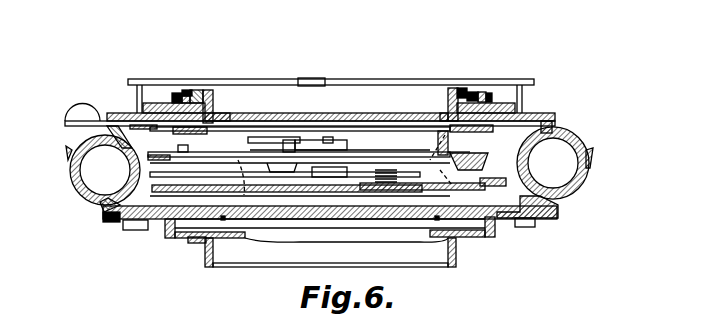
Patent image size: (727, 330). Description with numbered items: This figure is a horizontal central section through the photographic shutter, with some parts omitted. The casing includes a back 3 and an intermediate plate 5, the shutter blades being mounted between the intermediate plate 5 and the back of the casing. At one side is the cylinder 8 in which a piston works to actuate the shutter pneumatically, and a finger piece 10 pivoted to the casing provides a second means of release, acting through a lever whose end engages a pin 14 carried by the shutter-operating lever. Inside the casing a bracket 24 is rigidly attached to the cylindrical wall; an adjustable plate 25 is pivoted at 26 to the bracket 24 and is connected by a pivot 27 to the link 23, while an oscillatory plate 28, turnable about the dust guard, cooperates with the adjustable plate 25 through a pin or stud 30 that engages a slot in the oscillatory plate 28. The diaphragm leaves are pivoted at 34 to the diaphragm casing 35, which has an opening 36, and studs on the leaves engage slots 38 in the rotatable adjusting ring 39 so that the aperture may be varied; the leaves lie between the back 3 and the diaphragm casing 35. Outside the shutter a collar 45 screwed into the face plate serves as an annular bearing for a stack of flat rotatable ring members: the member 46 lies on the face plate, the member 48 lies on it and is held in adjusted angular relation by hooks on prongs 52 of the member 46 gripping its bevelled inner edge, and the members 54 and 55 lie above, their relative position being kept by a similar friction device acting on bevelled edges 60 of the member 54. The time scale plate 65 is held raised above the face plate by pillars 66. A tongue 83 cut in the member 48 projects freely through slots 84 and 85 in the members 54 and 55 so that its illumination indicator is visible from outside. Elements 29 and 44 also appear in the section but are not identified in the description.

The back 3 is at (116, 222).
The intermediate plate 5 is at (496, 178).
The cylinder 8 is at (72, 178).
The finger piece 10 is at (64, 117).
The pin 14 is at (472, 150).
The link 23 is at (200, 142).
The bracket 24 is at (350, 150).
The adjustable plate 25 is at (300, 140).
The pivot 26 is at (328, 137).
The pivot 27 is at (288, 140).
The oscillatory plate 28 is at (553, 128).
The plate 29 is at (238, 174).
The pin or stud 30 is at (262, 137).
The pivot 34 is at (183, 243).
The diaphragm casing 35 is at (167, 240).
The opening 36 is at (262, 240).
The slots 38 is at (223, 220).
The rotatable adjusting ring 39 is at (202, 225).
The upper frame 44 is at (329, 57).
The collar 45 is at (208, 92).
The member 46 is at (148, 113).
The member 48 is at (160, 103).
The prongs 52 is at (215, 113).
The member 54 is at (465, 88).
The member 55 is at (489, 93).
The bevelled edges 60 is at (198, 90).
The time scale plate 65 is at (365, 79).
The pillars 66 is at (186, 96).
The tongue 83 is at (312, 78).
The slot 84 is at (178, 93).
The slot 85 is at (186, 90).